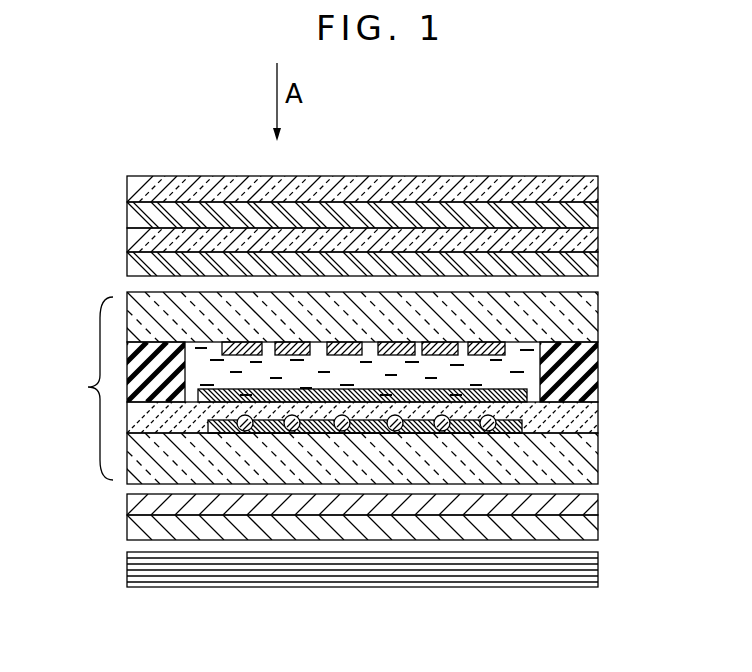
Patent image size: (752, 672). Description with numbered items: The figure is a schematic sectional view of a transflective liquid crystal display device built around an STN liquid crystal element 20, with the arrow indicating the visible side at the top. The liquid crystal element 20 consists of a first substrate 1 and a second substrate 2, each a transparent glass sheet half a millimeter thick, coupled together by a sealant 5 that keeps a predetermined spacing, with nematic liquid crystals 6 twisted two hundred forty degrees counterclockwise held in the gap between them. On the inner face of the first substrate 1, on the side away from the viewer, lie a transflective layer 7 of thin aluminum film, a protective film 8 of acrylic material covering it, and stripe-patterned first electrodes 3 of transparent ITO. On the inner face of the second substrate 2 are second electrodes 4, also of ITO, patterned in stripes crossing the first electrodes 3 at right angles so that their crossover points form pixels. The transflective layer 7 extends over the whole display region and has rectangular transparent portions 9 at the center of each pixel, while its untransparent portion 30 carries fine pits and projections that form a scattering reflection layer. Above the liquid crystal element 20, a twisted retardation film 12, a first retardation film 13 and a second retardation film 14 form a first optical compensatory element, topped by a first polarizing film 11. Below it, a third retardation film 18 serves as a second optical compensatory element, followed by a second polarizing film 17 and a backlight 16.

The first substrate 1 is at (594, 455).
The second substrate 2 is at (594, 312).
The first electrodes 3 is at (460, 386).
The second electrodes 4 is at (343, 341).
The sealant 5 is at (594, 367).
The nematic liquid crystals 6 is at (215, 363).
The transflective layer 7 is at (309, 444).
The protective film 8 is at (596, 413).
The transparent portions 9 is at (392, 434).
The first polarizing film 11 is at (597, 190).
The twisted retardation film 12 is at (597, 258).
The first retardation film 13 is at (597, 243).
The second retardation film 14 is at (597, 217).
The backlight 16 is at (597, 565).
The second polarizing film 17 is at (597, 521).
The third retardation film 18 is at (597, 500).
The liquid crystal element 20 is at (78, 388).
The untransparent portion 30 is at (459, 434).